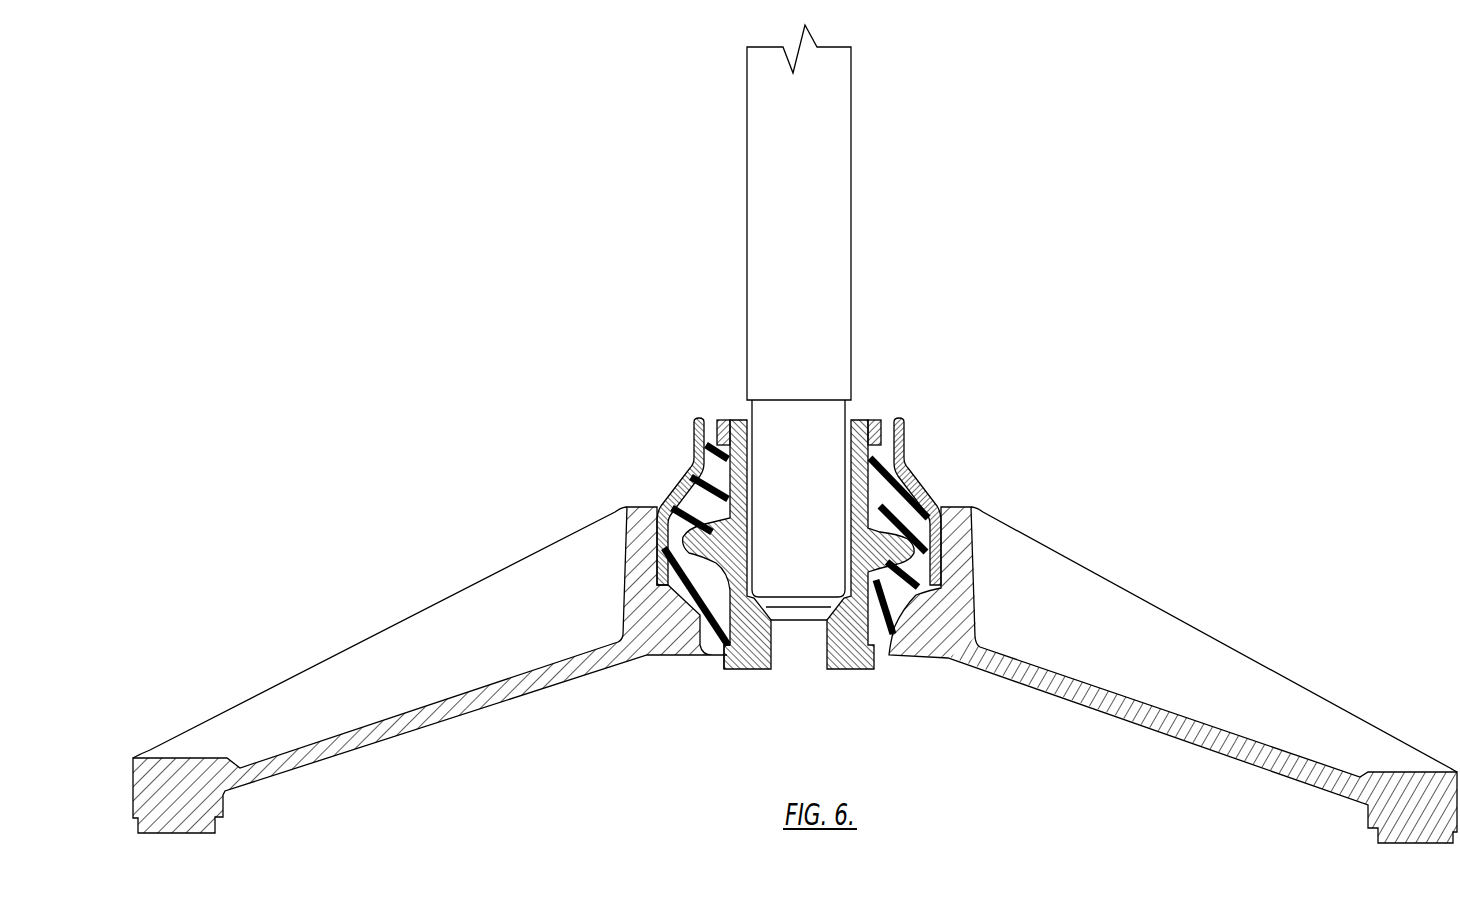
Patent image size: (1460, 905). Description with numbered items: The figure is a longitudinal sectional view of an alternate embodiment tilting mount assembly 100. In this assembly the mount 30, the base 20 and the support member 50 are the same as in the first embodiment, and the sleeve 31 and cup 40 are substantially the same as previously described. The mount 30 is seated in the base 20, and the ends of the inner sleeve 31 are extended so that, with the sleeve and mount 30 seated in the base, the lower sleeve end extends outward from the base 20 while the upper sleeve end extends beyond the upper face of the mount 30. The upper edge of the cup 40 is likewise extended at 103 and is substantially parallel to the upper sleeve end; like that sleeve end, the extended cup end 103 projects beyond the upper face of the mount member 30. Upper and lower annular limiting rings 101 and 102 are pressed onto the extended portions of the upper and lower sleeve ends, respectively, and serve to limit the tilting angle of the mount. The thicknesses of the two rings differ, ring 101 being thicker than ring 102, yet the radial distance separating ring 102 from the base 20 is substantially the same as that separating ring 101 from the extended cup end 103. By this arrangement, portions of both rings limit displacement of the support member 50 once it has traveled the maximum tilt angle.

The tilting mount assembly 100 is at (795, 559).
The support member 50 is at (827, 203).
The base 20 is at (933, 632).
The cup 40 is at (690, 462).
The mount 30 is at (893, 502).
The sleeve 31 is at (873, 548).
The upper annular limiting ring 101 is at (725, 418).
The lower annular limiting ring 102 is at (727, 667).
The extended cup end 103 is at (902, 418).